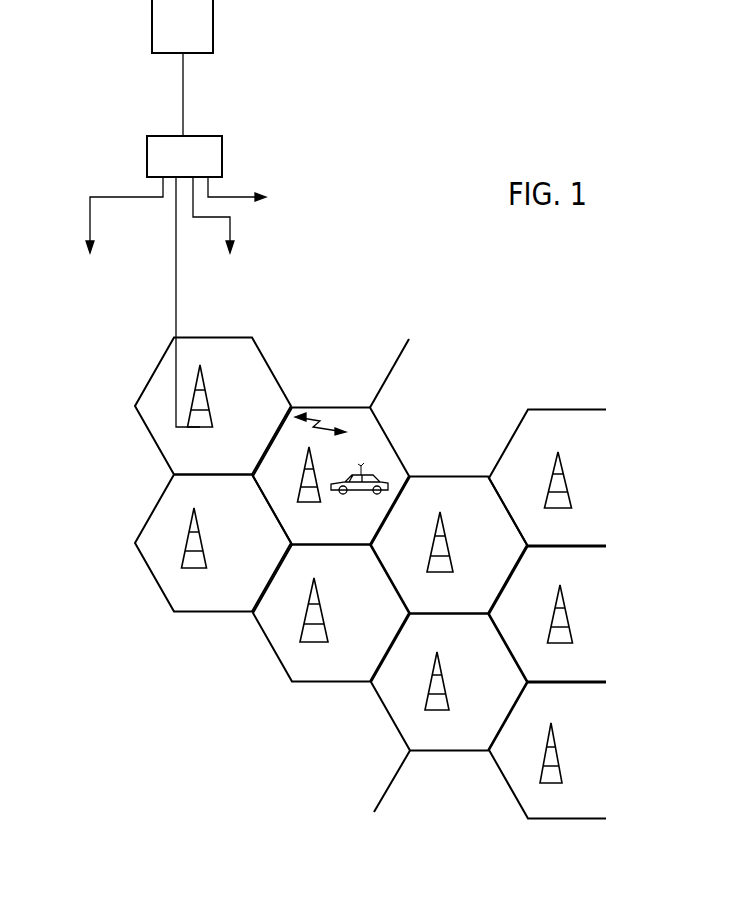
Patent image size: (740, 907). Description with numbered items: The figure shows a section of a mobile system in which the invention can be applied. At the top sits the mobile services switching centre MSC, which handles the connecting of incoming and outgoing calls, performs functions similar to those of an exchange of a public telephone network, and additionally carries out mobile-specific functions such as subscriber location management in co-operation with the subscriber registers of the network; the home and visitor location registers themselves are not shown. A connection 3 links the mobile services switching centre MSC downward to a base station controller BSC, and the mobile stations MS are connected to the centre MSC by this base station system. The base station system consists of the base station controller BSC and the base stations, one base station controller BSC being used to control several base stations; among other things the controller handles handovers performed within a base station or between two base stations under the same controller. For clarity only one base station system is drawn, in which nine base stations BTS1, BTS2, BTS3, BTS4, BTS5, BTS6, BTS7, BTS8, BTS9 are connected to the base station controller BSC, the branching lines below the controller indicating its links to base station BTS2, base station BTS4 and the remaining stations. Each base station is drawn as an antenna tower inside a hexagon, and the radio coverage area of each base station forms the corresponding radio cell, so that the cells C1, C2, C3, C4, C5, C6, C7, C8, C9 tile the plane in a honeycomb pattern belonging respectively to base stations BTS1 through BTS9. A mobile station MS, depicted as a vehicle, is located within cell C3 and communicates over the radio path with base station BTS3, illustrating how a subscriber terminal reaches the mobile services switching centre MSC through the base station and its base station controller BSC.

The mobile services switching centre MSC is at (182, 26).
The link between MSC and BSC 3 is at (183, 91).
The base station controller BSC is at (205, 281).
The radio cell C1 is at (152, 438).
The radio cell C2 is at (155, 583).
The radio cell C3 is at (330, 407).
The radio cell C4 is at (275, 657).
The radio cell C5 is at (448, 477).
The radio cell C6 is at (445, 750).
The radio cell C7 is at (561, 547).
The radio cell C8 is at (567, 683).
The radio cell C9 is at (567, 819).
The base station BTS1 is at (209, 414).
The base station BTS2 is at (209, 556).
The base station BTS3 is at (329, 492).
The base station BTS4 is at (329, 627).
The base station BTS5 is at (449, 558).
The base station BTS6 is at (445, 698).
The base station BTS7 is at (568, 495).
The base station BTS8 is at (569, 632).
The base station BTS9 is at (567, 768).
The mobile station MS is at (341, 453).